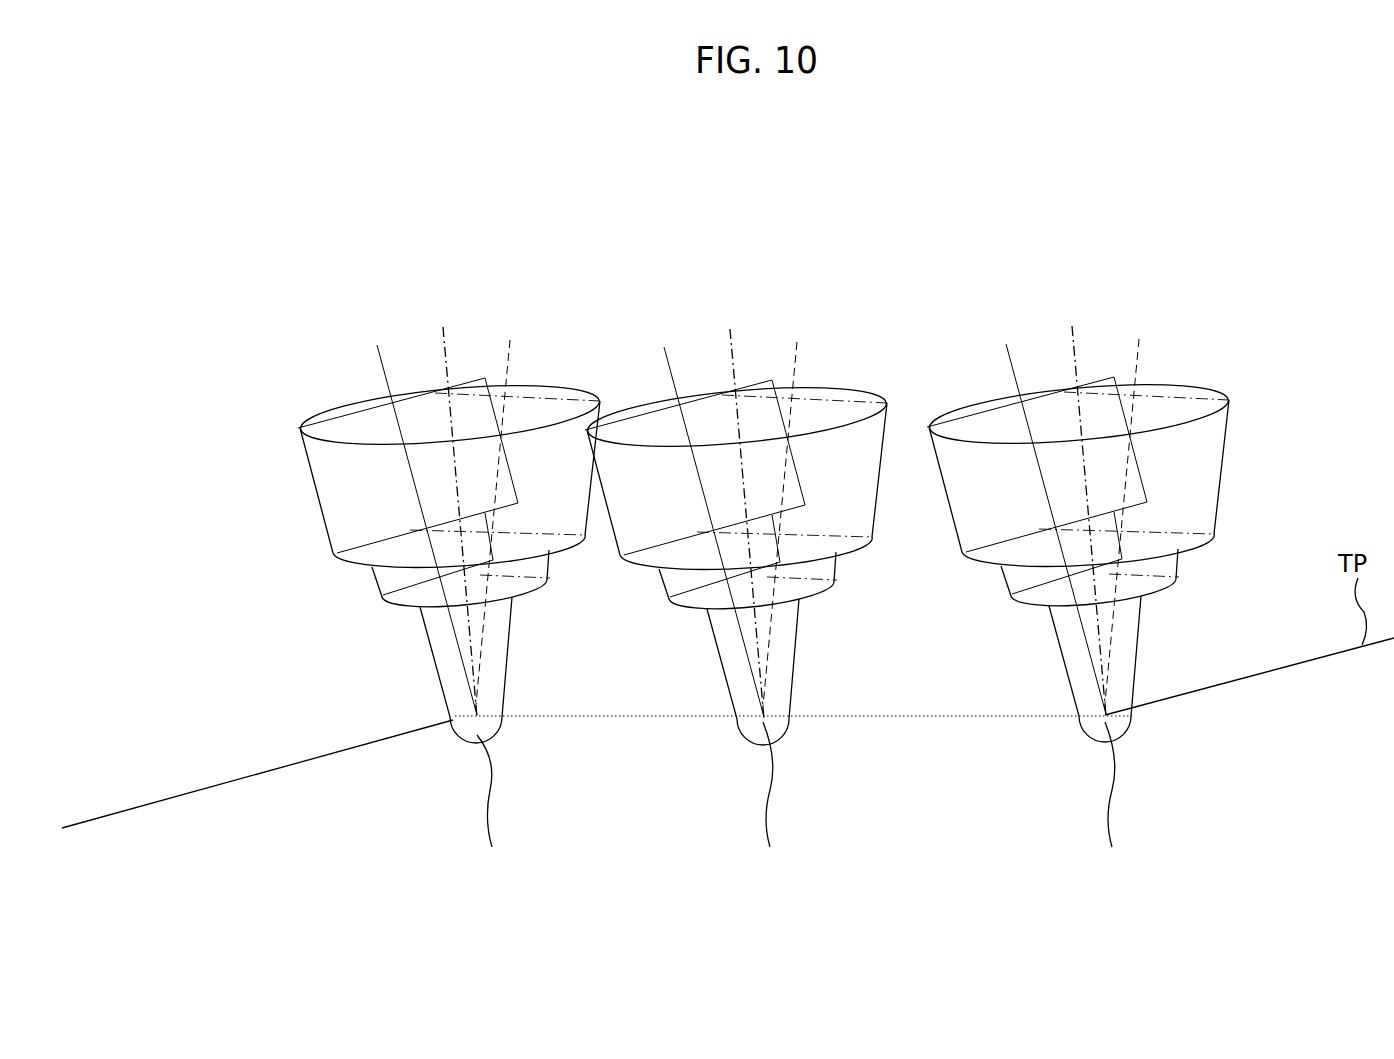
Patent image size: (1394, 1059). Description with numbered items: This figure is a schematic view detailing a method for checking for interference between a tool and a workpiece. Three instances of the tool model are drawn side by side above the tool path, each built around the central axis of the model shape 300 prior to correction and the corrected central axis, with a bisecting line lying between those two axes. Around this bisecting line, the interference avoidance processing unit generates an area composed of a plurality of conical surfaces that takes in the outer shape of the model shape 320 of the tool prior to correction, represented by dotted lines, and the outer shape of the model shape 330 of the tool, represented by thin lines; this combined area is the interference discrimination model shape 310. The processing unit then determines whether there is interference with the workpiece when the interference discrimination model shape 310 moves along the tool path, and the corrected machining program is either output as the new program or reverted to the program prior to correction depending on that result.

The model shape prior to correction 300 is at (797, 528).
The interference discrimination model shape 310 is at (326, 542).
The model shape of the tool prior to correction 320 is at (566, 396).
The model shape of the tool 330 is at (331, 426).